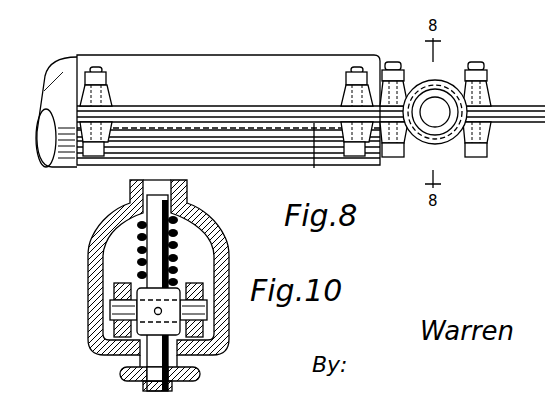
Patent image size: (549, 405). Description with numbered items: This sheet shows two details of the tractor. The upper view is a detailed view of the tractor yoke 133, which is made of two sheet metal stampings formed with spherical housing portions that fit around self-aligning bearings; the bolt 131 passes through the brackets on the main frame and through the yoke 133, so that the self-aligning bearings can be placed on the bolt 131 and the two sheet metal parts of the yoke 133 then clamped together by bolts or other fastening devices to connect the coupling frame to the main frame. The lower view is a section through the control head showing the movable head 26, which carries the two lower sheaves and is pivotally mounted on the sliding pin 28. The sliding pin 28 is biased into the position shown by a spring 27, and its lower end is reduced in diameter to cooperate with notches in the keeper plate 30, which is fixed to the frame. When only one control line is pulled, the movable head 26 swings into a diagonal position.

In FIG. 8, the bolt 131 is at (437, 112).
In FIG. 8, the yoke 133 is at (314, 168).
In FIG. 10, the movable head 26 is at (203, 289).
In FIG. 10, the spring 27 is at (178, 233).
In FIG. 10, the sliding pin 28 is at (132, 350).
In FIG. 10, the keeper plate 30 is at (200, 373).